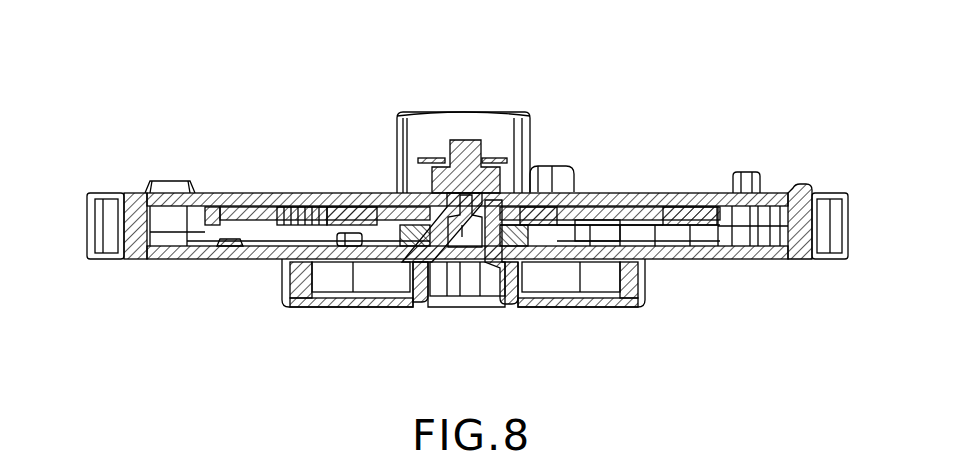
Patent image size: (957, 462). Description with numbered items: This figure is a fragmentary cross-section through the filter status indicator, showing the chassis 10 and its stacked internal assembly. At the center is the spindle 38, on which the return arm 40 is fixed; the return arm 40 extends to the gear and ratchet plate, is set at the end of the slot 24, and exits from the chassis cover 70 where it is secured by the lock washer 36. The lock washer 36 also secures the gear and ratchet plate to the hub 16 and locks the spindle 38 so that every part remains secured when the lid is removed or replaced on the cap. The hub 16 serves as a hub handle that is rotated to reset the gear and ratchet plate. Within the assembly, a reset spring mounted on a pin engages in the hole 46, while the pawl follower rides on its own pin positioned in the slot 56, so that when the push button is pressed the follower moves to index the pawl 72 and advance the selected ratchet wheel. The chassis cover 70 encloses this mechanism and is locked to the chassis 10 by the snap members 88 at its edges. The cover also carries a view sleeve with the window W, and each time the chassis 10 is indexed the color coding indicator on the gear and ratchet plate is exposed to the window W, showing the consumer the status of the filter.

The chassis 10 is at (467, 222).
The hub 16 is at (284, 280).
The slot 24 is at (222, 241).
The lock washer 36 is at (492, 161).
The spindle 38 is at (466, 148).
The return arm 40 is at (450, 265).
The hole 46 is at (328, 216).
The slot 56 is at (746, 173).
The chassis cover 70 is at (622, 194).
The pawl 72 is at (558, 268).
The snap members 88 is at (797, 186).
The window W is at (508, 108).